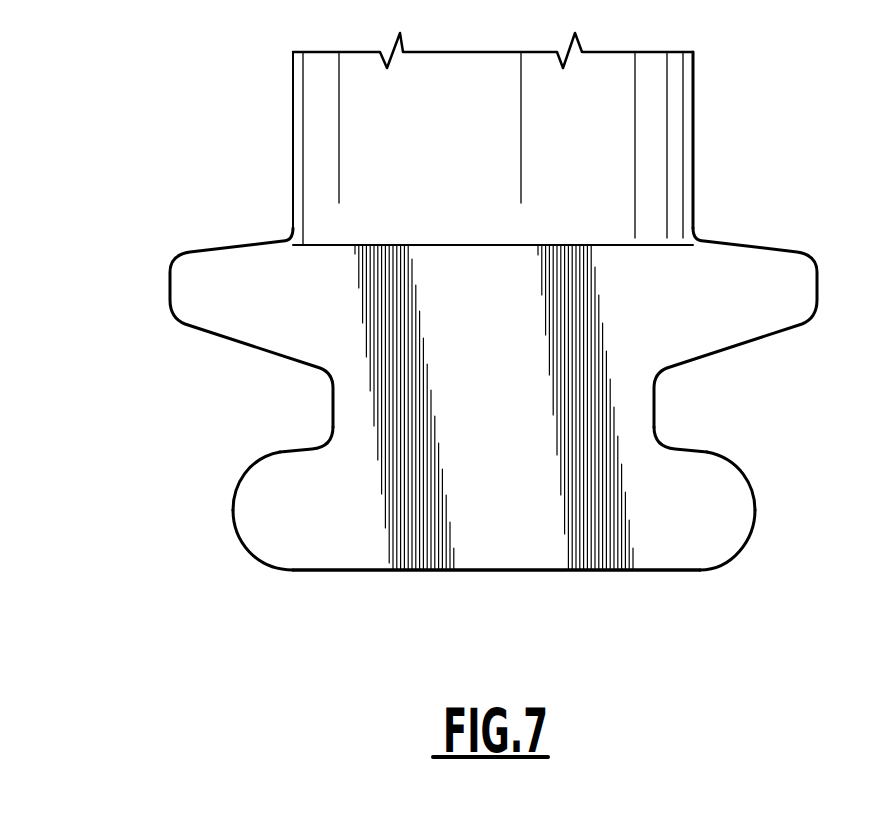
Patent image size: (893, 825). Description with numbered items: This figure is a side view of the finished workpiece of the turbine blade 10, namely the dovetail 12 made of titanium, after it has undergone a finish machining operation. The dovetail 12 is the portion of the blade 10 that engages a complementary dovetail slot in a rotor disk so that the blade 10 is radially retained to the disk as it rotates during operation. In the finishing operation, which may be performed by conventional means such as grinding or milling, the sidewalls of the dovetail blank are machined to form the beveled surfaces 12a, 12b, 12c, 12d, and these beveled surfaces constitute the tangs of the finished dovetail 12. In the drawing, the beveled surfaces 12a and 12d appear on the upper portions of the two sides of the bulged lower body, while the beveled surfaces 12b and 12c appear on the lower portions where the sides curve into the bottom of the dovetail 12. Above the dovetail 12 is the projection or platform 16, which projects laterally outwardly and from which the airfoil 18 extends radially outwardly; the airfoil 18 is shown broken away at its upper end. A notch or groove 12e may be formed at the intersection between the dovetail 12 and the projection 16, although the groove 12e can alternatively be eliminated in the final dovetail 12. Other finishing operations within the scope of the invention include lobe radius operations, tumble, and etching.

The turbine blade 10 is at (133, 150).
The dovetail 12 is at (160, 455).
The beveled surface 12a is at (722, 452).
The beveled surface 12b is at (736, 560).
The beveled surface 12c is at (256, 560).
The beveled surface 12d is at (263, 452).
The groove 12e is at (487, 395).
The platform 16 is at (216, 250).
The airfoil 18 is at (321, 86).